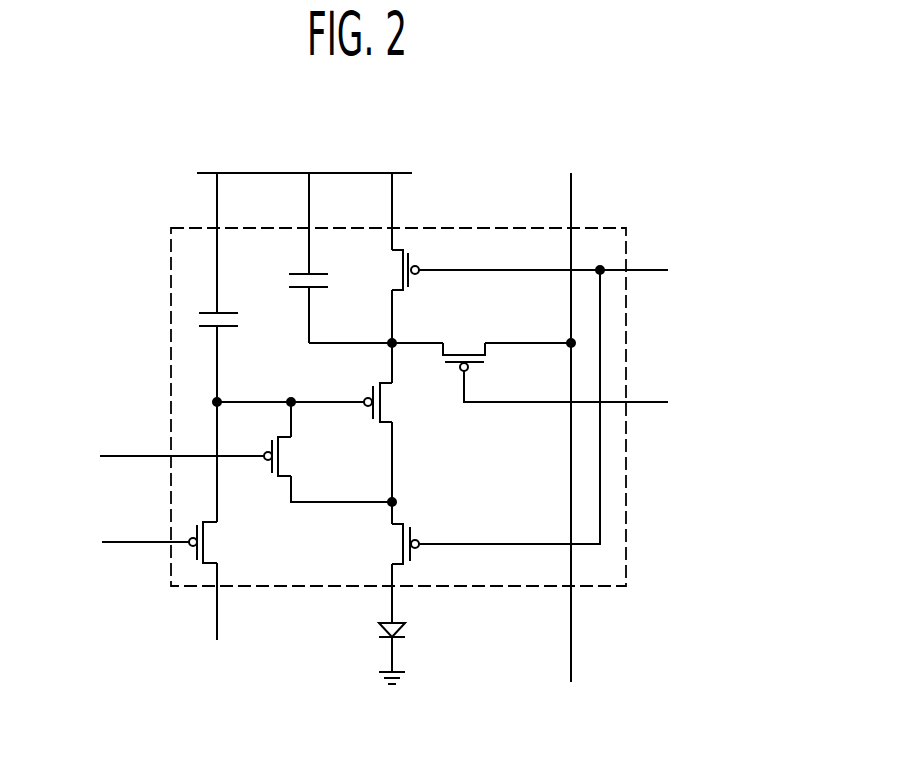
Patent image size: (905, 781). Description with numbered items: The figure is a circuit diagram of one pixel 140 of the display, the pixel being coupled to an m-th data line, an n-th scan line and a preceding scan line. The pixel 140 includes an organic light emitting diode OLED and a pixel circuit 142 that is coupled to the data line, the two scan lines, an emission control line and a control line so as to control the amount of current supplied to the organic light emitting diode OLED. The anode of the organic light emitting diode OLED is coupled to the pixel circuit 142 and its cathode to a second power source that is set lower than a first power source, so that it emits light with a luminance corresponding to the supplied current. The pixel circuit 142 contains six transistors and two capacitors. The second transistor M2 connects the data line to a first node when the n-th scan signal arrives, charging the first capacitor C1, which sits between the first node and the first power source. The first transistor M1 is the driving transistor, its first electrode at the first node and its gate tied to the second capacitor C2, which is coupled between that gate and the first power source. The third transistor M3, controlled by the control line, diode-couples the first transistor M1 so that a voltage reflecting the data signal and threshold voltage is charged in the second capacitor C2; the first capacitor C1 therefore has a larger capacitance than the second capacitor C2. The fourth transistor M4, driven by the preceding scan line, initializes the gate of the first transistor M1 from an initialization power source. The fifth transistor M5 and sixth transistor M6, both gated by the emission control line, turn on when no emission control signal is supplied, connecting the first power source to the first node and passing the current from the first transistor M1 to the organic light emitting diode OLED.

The pixel 140 is at (665, 98).
The pixel circuit 142 is at (625, 224).
The first transistor M1 is at (388, 402).
The second transistor M2 is at (464, 342).
The third transistor M3 is at (289, 456).
The fourth transistor M4 is at (215, 542).
The fifth transistor M5 is at (396, 270).
The sixth transistor M6 is at (397, 544).
The first capacitor C1 is at (320, 282).
The second capacitor C2 is at (231, 322).
The organic light emitting diode OLED is at (418, 635).